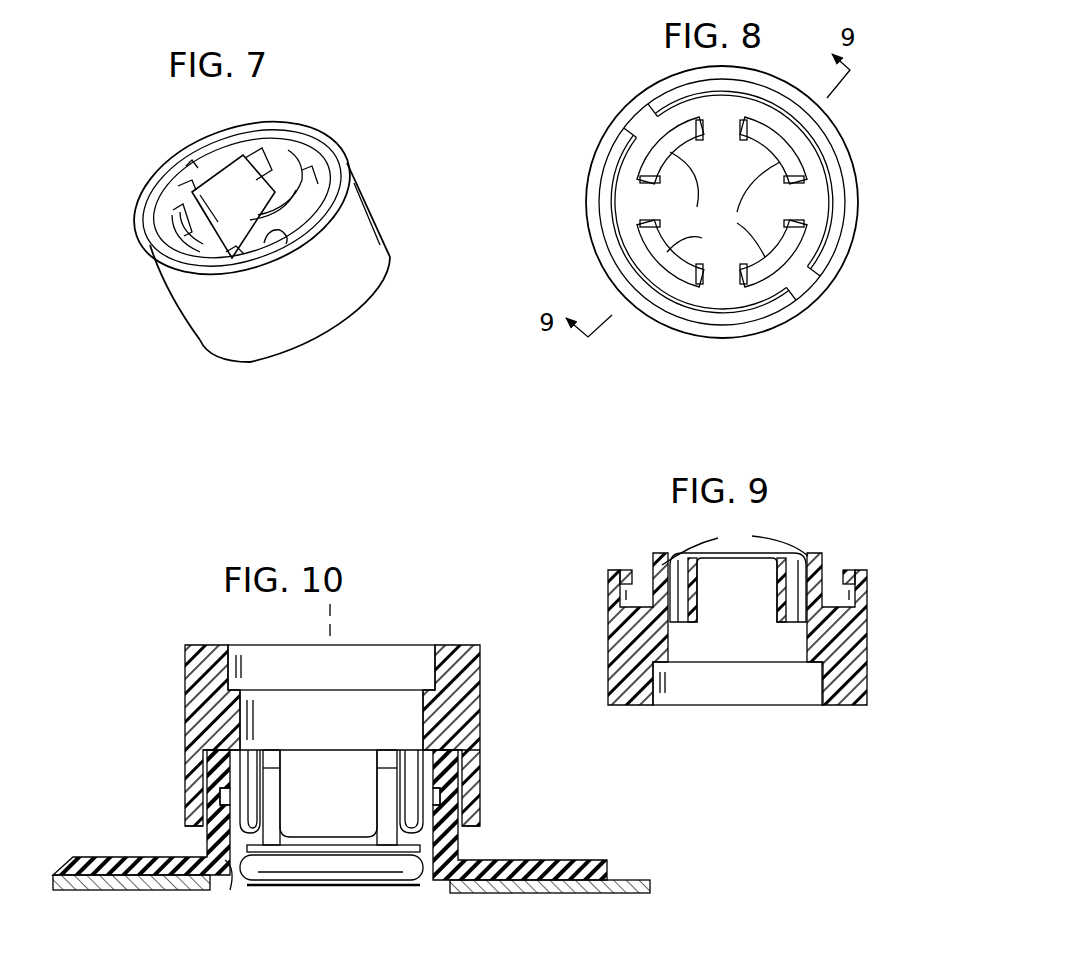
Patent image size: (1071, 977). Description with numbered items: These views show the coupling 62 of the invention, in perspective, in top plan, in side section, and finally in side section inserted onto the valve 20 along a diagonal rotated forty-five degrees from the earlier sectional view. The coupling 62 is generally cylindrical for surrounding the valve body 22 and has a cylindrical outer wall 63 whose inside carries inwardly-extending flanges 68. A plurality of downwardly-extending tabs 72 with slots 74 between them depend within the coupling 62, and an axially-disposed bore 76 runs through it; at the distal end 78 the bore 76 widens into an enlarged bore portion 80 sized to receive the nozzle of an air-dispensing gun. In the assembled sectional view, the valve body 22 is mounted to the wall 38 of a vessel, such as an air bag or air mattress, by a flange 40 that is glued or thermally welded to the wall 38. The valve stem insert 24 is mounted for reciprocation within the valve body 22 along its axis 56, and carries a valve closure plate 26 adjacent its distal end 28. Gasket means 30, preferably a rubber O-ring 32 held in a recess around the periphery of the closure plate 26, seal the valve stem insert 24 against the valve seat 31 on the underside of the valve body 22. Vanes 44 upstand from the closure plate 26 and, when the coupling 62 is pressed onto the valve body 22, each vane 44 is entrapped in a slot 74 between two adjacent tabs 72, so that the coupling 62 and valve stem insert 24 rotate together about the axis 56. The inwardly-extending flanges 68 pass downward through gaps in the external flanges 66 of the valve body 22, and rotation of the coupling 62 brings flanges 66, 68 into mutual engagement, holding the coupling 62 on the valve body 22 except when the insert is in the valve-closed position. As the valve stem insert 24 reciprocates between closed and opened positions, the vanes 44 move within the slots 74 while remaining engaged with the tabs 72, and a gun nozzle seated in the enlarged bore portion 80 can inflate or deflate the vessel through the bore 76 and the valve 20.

In FIG. 10, the valve 20 is at (486, 849).
In FIG. 10, the valve body 22 is at (205, 842).
In FIG. 10, the valve stem insert 24 is at (358, 890).
In FIG. 10, the valve closure plate 26 is at (240, 890).
In FIG. 10, the distal end 28 is at (310, 885).
In FIG. 10, the gasket means 30 is at (431, 888).
In FIG. 10, the valve seat 31 is at (232, 880).
In FIG. 10, the O-ring 32 is at (335, 880).
In FIG. 10, the wall 38 is at (628, 880).
In FIG. 10, the flange 40 is at (563, 860).
In FIG. 10, the vanes 44 is at (380, 831).
In FIG. 10, the axis 56 is at (336, 612).
In FIG. 7, the coupling 62 is at (333, 125).
In FIG. 8, the coupling 62 is at (578, 173).
In FIG. 9, the coupling 62 is at (864, 716).
In FIG. 10, the coupling 62 is at (185, 678).
In FIG. 7, the outer wall 63 is at (152, 240).
In FIG. 8, the outer wall 63 is at (683, 327).
In FIG. 9, the outer wall 63 is at (612, 585).
In FIG. 10, the outer wall 63 is at (472, 810).
In FIG. 10, the external flanges 66 is at (204, 780).
In FIG. 7, the inwardly-extending flanges 68 is at (185, 162).
In FIG. 8, the inwardly-extending flanges 68 is at (635, 112).
In FIG. 9, the inwardly-extending flanges 68 is at (625, 572).
In FIG. 7, the tabs 72 is at (190, 178).
In FIG. 8, the tabs 72 is at (697, 207).
In FIG. 9, the tabs 72 is at (740, 557).
In FIG. 10, the tabs 72 is at (410, 757).
In FIG. 7, the slots 74 is at (255, 150).
In FIG. 8, the slots 74 is at (717, 123).
In FIG. 9, the slots 74 is at (790, 596).
In FIG. 10, the slots 74 is at (378, 764).
In FIG. 7, the bore 76 is at (220, 188).
In FIG. 8, the bore 76 is at (744, 156).
In FIG. 9, the bore 76 is at (765, 640).
In FIG. 10, the bore 76 is at (274, 700).
In FIG. 7, the distal end 78 is at (346, 324).
In FIG. 9, the distal end 78 is at (630, 708).
In FIG. 10, the distal end 78 is at (447, 645).
In FIG. 9, the enlarged bore portion 80 is at (705, 707).
In FIG. 10, the enlarged bore portion 80 is at (345, 668).